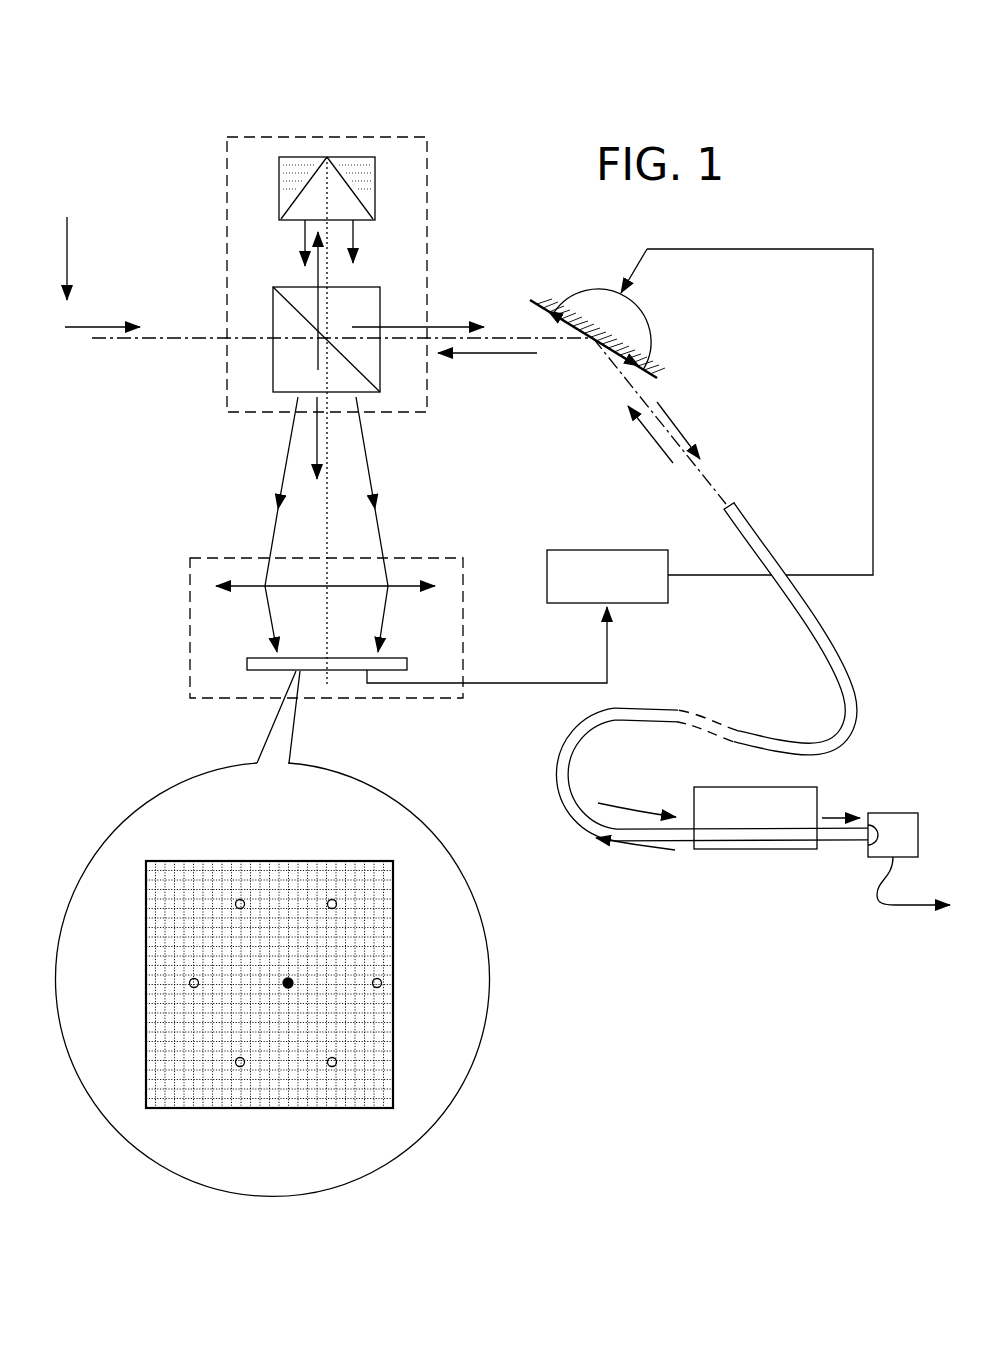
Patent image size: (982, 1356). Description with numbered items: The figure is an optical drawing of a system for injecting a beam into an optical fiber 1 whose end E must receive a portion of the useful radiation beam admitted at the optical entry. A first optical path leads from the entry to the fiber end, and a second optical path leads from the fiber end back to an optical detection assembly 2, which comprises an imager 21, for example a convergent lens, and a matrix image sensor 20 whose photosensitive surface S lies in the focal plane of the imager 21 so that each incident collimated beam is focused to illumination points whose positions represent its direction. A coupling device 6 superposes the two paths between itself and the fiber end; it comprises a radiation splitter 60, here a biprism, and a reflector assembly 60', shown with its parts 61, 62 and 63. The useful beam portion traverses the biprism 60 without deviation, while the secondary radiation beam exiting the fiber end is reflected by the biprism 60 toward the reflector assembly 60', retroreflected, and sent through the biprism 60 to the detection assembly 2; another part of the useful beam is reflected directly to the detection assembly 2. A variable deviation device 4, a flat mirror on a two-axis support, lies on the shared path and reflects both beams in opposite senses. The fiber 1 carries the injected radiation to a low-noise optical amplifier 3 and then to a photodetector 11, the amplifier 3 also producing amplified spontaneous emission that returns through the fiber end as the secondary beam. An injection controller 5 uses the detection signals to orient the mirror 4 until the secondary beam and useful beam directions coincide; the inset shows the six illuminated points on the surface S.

The optical fiber 1 is at (763, 550).
The optical detection assembly 2 is at (463, 578).
The optical amplifier 3 is at (780, 849).
The variable deviation device 4 is at (540, 302).
The injection controller 5 is at (648, 603).
The coupling device 6 is at (427, 157).
The photodetector 11 is at (907, 813).
The matrix image sensor 20 is at (408, 660).
The imager 21 is at (410, 583).
The radiation splitter 60 is at (266, 317).
The reflector assembly 60' is at (329, 120).
The first prism face 61 is at (297, 177).
The second prism face 62 is at (353, 177).
The prism edge 63 is at (320, 187).